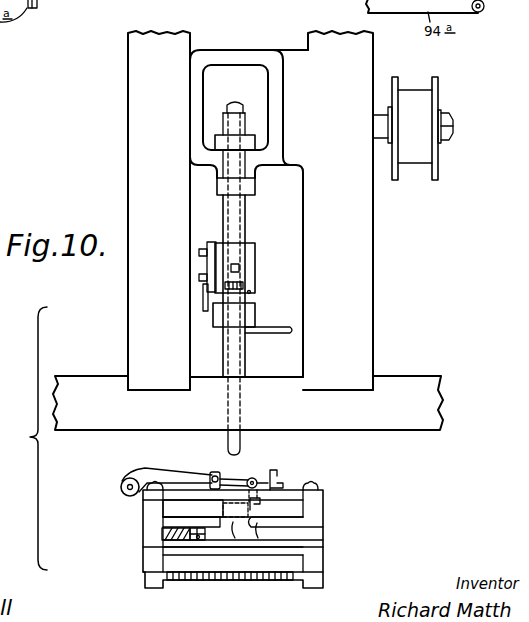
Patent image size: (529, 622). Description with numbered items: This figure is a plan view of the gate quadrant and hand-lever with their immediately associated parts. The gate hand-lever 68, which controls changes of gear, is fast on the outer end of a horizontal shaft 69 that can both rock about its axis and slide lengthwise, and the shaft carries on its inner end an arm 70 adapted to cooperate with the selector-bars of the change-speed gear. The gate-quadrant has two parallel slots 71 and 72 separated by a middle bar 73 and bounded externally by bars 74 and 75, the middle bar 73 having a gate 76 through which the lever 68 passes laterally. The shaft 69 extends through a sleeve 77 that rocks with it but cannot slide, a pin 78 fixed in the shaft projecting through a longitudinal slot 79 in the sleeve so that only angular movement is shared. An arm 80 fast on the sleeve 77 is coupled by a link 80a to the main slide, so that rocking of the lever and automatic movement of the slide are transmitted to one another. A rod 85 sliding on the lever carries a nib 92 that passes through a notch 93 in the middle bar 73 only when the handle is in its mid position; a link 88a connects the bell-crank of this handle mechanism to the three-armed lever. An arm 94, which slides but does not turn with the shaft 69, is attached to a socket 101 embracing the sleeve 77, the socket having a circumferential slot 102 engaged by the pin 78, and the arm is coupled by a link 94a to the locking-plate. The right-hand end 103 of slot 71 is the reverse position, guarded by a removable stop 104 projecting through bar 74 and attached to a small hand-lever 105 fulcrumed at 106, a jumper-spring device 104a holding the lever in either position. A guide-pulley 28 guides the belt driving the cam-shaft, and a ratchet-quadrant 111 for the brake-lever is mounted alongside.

The guide-pulley 28 is at (412, 97).
The gate hand-lever 68 is at (162, 533).
The horizontal shaft 69 is at (241, 441).
The arm 70 is at (245, 120).
The slot 71 is at (176, 508).
The slot 72 is at (293, 537).
The middle bar 73 is at (150, 520).
The bar 74 is at (292, 490).
The bar 75 is at (176, 548).
The gate 76 is at (233, 524).
The sleeve 77 is at (246, 365).
The pin 78 is at (243, 284).
The longitudinal slot 79 is at (239, 266).
The arm 80 is at (220, 328).
The link 80a is at (263, 334).
The rod 85 is at (196, 541).
The link 88a is at (132, 0).
The nib 92 is at (200, 541).
The notch 93 is at (257, 525).
The arm 94 is at (207, 267).
The link 94a is at (204, 294).
The socket 101 is at (252, 243).
The circumferential slot 102 is at (250, 292).
The right-hand end of slot 103 is at (297, 510).
The removable stop 104 is at (256, 502).
The jumper-spring device 104a is at (275, 474).
The small hand-lever 105 is at (146, 473).
The fulcrum 106 is at (212, 474).
The ratchet-quadrant 111 is at (175, 575).